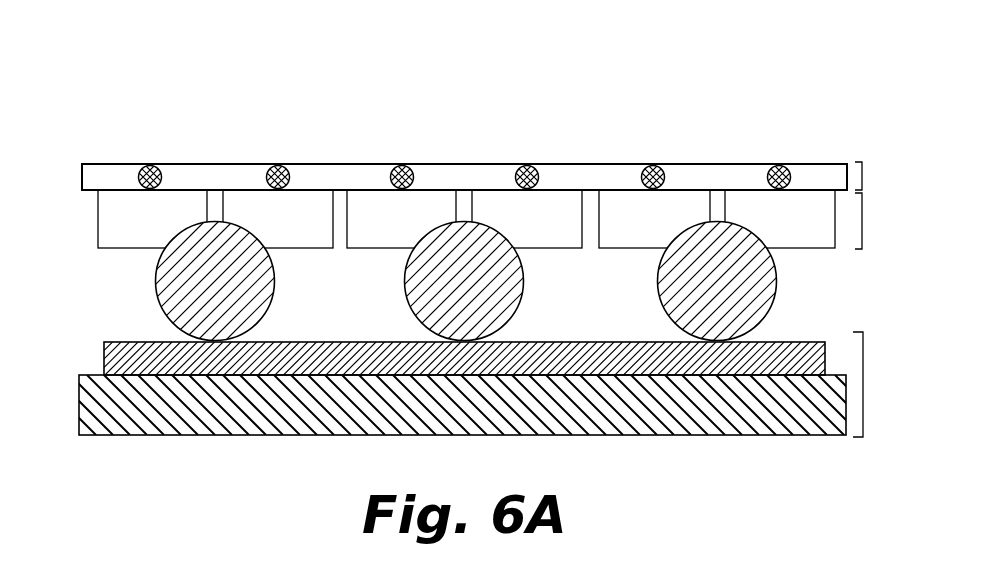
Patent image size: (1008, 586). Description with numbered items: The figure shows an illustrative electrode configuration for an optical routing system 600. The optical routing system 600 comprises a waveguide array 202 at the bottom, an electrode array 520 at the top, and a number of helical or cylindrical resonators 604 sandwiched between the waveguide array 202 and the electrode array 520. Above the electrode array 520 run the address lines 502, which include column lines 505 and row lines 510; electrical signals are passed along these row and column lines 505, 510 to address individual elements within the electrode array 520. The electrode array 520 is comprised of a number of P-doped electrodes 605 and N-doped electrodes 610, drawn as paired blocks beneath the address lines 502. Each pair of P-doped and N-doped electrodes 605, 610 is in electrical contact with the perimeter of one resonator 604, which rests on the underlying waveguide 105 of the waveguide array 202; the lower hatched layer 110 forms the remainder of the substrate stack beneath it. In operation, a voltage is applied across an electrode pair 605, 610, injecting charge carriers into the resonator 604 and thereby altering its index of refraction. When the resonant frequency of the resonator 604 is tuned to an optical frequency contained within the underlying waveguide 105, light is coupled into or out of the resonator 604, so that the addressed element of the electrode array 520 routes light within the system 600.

The optical routing system 600 is at (109, 72).
The column lines 505 is at (143, 168).
The row lines 510 is at (200, 164).
The address lines 502 is at (866, 163).
The P-doped electrodes 605 is at (98, 230).
The N-doped electrodes 610 is at (306, 248).
The electrode array 520 is at (866, 250).
The resonator 604 is at (156, 284).
The waveguide 105 is at (104, 343).
The substrate 110 is at (79, 394).
The waveguide array 202 is at (864, 383).